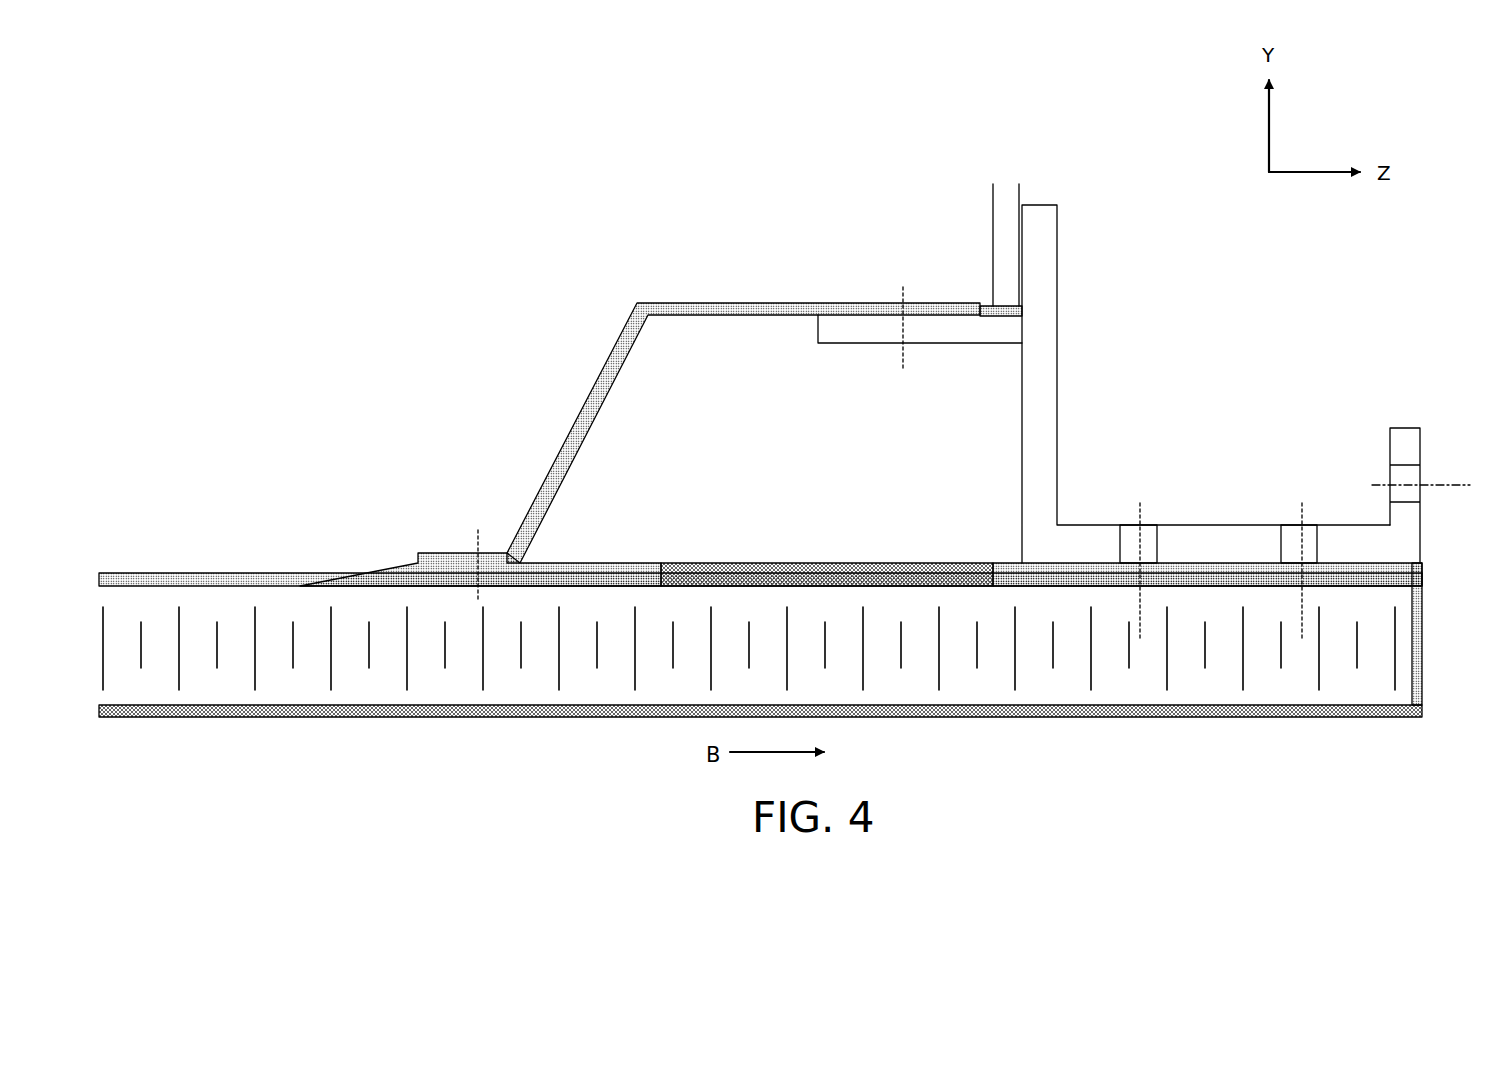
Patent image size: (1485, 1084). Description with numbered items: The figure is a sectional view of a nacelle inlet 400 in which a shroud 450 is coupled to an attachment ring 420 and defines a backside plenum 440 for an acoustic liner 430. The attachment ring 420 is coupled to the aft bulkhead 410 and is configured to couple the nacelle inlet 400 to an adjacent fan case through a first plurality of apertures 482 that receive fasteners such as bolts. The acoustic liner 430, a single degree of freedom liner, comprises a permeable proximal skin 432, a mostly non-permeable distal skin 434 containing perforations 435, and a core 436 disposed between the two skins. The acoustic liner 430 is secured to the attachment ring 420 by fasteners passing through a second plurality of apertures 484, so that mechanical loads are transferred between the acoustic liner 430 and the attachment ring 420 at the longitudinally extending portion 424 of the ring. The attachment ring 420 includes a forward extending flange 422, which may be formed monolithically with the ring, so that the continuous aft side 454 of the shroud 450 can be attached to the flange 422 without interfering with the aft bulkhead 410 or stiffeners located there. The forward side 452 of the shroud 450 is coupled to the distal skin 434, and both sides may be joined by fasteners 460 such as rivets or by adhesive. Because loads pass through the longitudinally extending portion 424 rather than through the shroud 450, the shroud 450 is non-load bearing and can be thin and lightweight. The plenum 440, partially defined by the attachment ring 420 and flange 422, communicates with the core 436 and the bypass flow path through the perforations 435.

The nacelle inlet 400 is at (611, 147).
The aft bulkhead 410 is at (1001, 222).
The attachment ring 420 is at (1210, 525).
The flange 422 is at (873, 328).
The longitudinally extending portion 424 is at (1174, 540).
The acoustic liner 430 is at (760, 643).
The proximal skin 432 is at (940, 708).
The distal skin 434 is at (1077, 572).
The perforations 435 is at (895, 566).
The core 436 is at (1263, 660).
The plenum 440 is at (851, 451).
The shroud 450 is at (760, 303).
The forward side 452 is at (417, 557).
The aft side 454 is at (981, 308).
The fasteners 460 is at (478, 559).
The first plurality of apertures 482 is at (1410, 465).
The second plurality of apertures 484 is at (1118, 530).